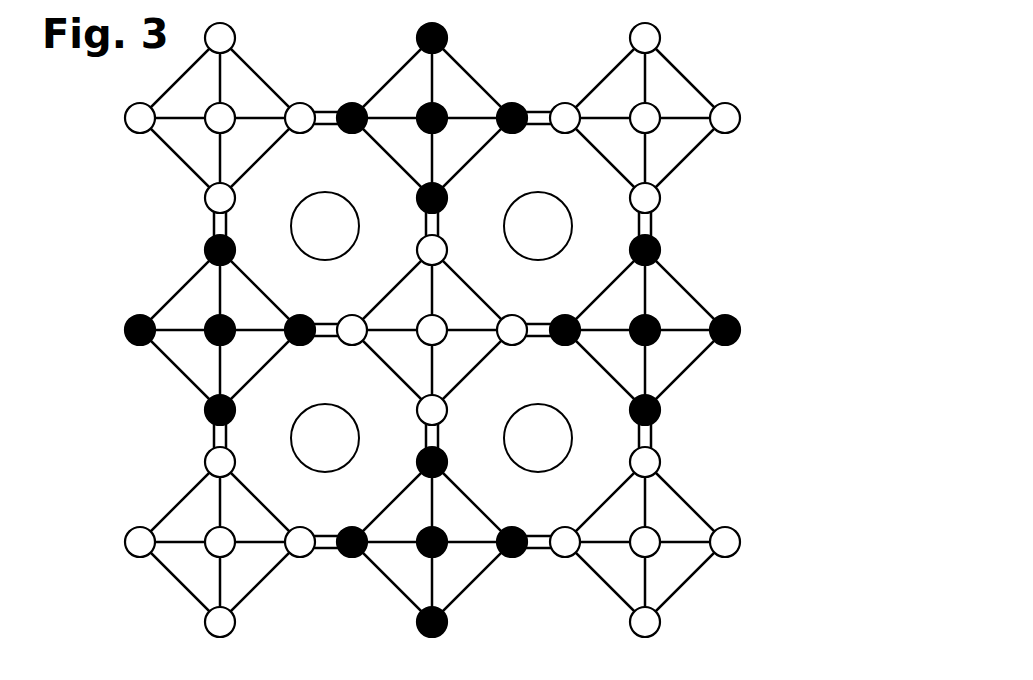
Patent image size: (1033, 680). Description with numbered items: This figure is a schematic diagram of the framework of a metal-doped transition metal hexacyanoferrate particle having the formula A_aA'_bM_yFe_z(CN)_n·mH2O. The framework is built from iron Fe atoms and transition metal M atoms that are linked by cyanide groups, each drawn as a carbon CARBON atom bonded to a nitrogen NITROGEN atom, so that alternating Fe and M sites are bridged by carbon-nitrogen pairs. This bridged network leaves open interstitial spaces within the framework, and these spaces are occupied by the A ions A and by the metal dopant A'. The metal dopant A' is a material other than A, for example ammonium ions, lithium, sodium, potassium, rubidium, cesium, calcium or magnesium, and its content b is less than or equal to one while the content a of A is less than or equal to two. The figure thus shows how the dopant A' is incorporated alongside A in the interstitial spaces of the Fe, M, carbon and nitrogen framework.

The iron Fe is at (220, 542).
The transition metal M is at (432, 542).
The carbon CARBON is at (512, 542).
The nitrogen NITROGEN is at (645, 462).
The A ion A is at (431, 332).
The metal dopant A' is at (325, 226).